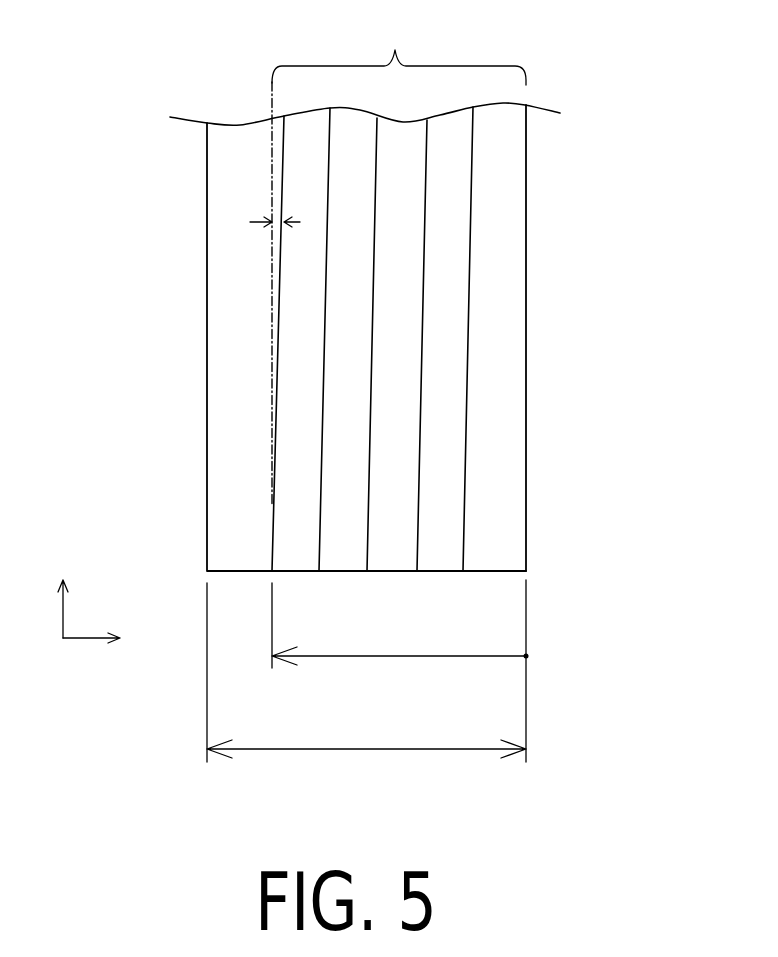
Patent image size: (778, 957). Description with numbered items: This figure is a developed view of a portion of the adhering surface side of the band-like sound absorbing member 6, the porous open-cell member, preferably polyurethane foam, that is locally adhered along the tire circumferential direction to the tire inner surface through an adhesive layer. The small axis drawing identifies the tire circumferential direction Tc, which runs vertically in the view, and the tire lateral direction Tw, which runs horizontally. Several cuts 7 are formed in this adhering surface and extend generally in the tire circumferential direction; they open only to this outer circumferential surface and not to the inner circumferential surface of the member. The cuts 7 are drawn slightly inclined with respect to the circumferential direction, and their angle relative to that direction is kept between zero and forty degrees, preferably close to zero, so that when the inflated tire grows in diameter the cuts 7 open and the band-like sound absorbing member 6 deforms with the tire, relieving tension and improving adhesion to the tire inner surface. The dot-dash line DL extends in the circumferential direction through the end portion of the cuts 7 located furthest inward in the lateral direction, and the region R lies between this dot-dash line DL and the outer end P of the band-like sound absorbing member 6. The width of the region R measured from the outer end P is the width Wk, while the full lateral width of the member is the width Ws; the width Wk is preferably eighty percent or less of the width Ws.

The band-like sound absorbing member 6 is at (506, 250).
The outer end of the band-like sound absorbing member P is at (528, 390).
The cuts 7 is at (282, 323).
The dot-dash line DL is at (272, 100).
The region R is at (399, 44).
The width of the region Wk is at (400, 671).
The width of the band-like sound absorbing member Ws is at (366, 672).
The tire circumferential direction Tc is at (64, 584).
The tire lateral direction Tw is at (115, 642).